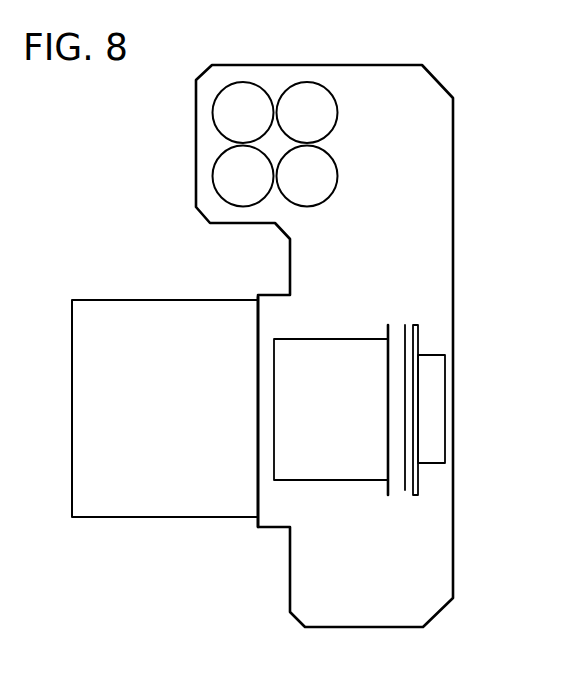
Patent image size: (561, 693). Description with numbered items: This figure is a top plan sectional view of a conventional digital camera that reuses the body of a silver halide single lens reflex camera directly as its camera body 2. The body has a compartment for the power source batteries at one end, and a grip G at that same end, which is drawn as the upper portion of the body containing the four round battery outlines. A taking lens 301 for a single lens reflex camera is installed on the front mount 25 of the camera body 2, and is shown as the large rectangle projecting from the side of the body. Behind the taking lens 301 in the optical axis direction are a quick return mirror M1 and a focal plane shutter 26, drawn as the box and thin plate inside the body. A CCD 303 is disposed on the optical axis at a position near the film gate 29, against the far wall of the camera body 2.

The camera body 2 is at (398, 65).
The grip G is at (245, 103).
The taking lens 301 is at (108, 305).
The front mount 25 is at (258, 297).
The quick return mirror M1 is at (332, 480).
The focal plane shutter 26 is at (403, 488).
The film gate 29 is at (417, 325).
The CCD 303 is at (445, 410).